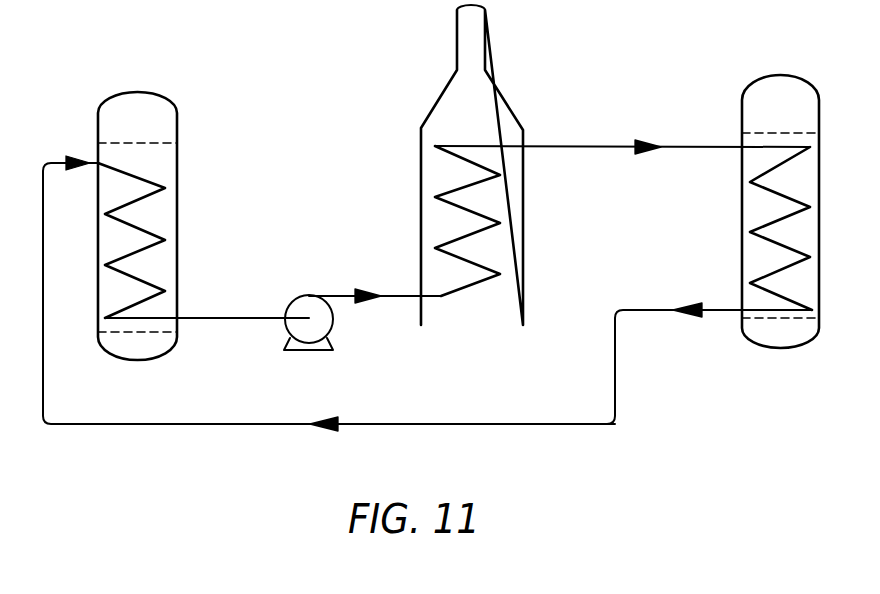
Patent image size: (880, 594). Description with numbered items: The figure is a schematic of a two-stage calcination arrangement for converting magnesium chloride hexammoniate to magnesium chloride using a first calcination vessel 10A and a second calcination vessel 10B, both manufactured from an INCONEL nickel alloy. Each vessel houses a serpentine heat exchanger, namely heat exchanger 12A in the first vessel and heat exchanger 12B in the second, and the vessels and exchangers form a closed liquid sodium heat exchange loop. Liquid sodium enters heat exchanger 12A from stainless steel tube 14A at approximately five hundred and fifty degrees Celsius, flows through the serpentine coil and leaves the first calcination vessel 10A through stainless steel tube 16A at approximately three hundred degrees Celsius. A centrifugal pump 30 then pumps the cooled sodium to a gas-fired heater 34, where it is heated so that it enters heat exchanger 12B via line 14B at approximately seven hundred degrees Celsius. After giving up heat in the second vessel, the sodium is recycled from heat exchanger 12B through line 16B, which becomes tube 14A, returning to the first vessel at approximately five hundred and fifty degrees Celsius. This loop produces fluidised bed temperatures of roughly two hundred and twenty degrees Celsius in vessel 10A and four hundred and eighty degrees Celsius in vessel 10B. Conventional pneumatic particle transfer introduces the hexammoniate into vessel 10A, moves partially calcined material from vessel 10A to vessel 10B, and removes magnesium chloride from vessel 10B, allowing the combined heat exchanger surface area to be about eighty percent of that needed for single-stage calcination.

The first calcination vessel 10A is at (178, 190).
The serpentine heat exchanger 12A is at (160, 282).
The stainless steel tube 14A is at (45, 323).
The stainless steel tube 16A is at (215, 320).
The centrifugal pump 30 is at (333, 320).
The gas-fired heater 34 is at (523, 277).
The line 14B is at (585, 147).
The second calcination vessel 10B is at (742, 204).
The serpentine heat exchanger 12B is at (746, 259).
The line 16B is at (658, 310).